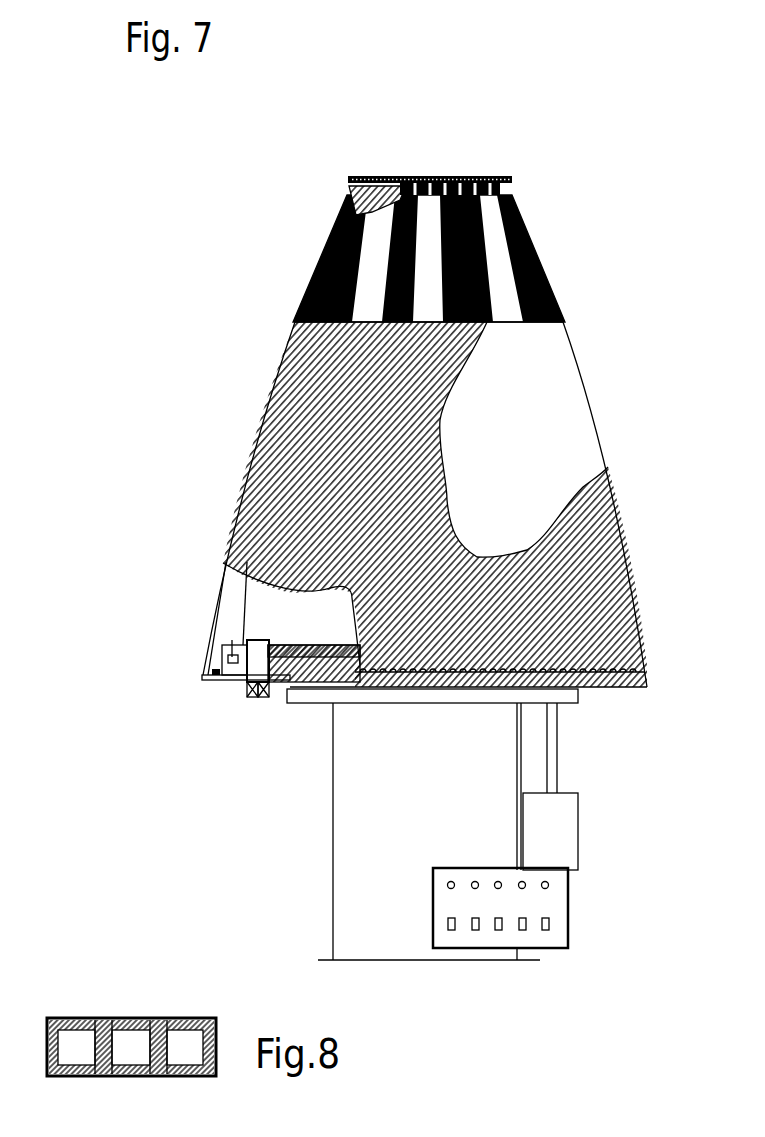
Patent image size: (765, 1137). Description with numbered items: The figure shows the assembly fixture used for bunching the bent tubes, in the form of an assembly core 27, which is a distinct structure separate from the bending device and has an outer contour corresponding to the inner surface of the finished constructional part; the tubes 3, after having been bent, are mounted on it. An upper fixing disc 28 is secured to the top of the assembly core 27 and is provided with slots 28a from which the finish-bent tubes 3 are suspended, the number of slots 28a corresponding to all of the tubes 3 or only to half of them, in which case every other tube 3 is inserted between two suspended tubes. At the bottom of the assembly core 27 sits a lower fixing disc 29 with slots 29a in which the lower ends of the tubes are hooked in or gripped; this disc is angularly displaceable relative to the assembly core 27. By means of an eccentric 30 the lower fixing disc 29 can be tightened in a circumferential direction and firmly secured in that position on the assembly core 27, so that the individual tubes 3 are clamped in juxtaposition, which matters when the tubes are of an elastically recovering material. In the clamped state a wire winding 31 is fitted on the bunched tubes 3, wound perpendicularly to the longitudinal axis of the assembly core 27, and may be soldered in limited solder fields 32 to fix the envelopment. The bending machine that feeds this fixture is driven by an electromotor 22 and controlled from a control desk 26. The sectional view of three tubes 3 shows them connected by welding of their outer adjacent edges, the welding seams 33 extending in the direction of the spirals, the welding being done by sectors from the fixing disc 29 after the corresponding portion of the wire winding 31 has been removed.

In FIG. 7, the tubes 3 is at (247, 462).
In FIG. 8, the tubes 3 is at (140, 1077).
In FIG. 7, the electromotor 22 is at (567, 825).
In FIG. 7, the control desk 26 is at (490, 935).
In FIG. 7, the assembly core 27 is at (558, 430).
In FIG. 7, the upper fixing disc 28 is at (358, 180).
In FIG. 7, the slots 28a is at (440, 178).
In FIG. 7, the lower fixing disc 29 is at (233, 680).
In FIG. 7, the slots 29a is at (212, 680).
In FIG. 7, the eccentric 30 is at (275, 700).
In FIG. 7, the wire winding 31 is at (553, 290).
In FIG. 7, the solder fields 32 is at (497, 242).
In FIG. 8, the welding seams 33 is at (155, 1018).